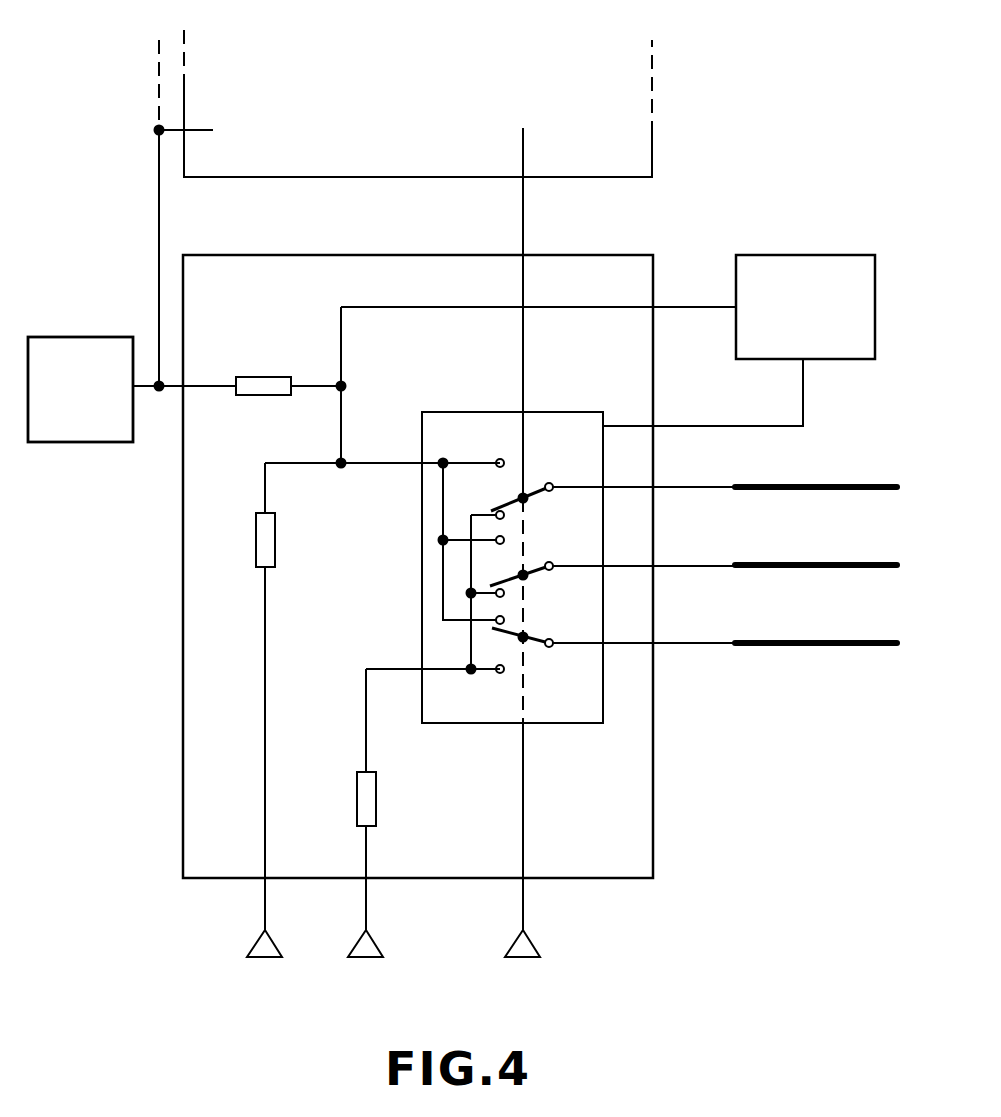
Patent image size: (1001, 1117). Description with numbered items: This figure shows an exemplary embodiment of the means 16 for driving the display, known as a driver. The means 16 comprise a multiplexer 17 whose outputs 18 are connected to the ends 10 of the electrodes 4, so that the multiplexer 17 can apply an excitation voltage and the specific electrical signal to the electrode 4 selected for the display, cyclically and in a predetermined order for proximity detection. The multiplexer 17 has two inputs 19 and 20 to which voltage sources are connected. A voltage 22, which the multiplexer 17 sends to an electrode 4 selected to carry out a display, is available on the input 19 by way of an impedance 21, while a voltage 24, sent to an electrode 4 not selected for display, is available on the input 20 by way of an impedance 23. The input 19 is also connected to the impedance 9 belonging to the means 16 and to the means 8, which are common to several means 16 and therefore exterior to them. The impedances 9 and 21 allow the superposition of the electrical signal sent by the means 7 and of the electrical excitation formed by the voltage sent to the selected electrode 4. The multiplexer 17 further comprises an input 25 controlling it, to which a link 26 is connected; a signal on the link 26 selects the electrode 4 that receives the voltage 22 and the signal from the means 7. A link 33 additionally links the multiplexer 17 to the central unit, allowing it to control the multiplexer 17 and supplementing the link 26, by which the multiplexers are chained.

The electrode 4 is at (852, 485).
The means for sending the electrical signal 7 is at (80, 337).
The means common to several driving means 8 is at (790, 255).
The impedance 9 is at (270, 377).
The ends of the electrodes 10 is at (736, 486).
The means for driving the display 16 is at (184, 33).
The multiplexer 17 is at (548, 412).
The outputs 18 is at (604, 487).
The input 19 is at (421, 466).
The input 20 is at (421, 668).
The impedance 21 is at (277, 530).
The voltage 22 is at (250, 951).
The impedance 23 is at (356, 800).
The voltage 24 is at (378, 951).
The control input 25 is at (525, 725).
The link 26 is at (534, 951).
The link 33 is at (806, 413).